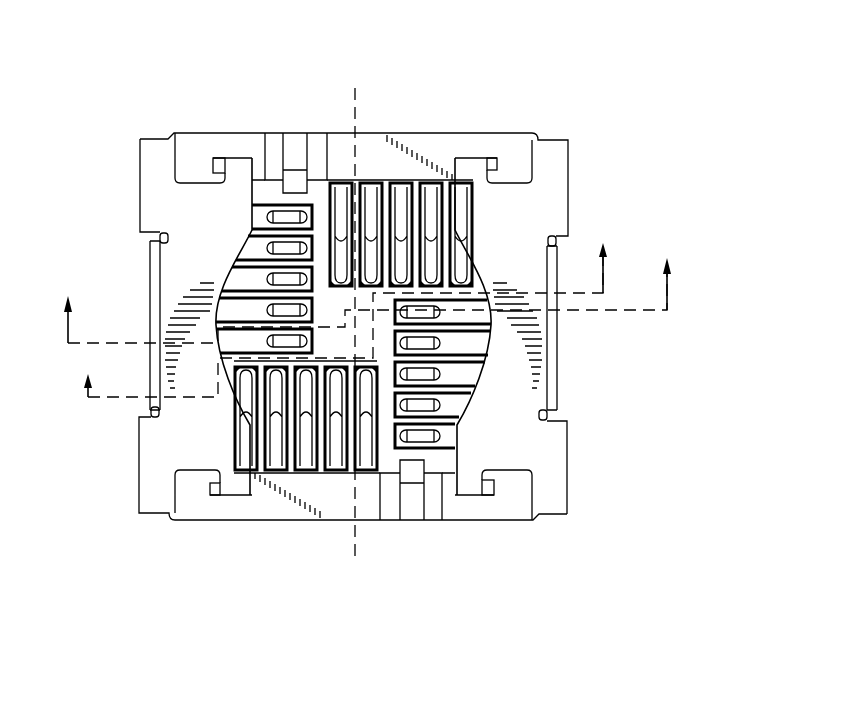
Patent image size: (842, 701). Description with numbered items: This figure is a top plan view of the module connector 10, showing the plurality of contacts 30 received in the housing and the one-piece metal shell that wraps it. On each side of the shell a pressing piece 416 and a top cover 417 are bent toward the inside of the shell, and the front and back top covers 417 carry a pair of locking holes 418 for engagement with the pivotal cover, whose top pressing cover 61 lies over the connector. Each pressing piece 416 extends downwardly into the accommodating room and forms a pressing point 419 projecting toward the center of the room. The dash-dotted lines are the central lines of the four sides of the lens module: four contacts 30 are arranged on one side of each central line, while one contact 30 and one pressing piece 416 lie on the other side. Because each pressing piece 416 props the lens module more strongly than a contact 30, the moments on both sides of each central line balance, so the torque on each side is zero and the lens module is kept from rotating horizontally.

The module connector 10 is at (116, 97).
The contacts 30 is at (364, 222).
The top pressing cover 61 is at (205, 242).
The pressing piece 416 is at (298, 165).
The top cover 417 is at (192, 143).
The locking holes 418 is at (220, 155).
The pressing points 419 is at (287, 140).